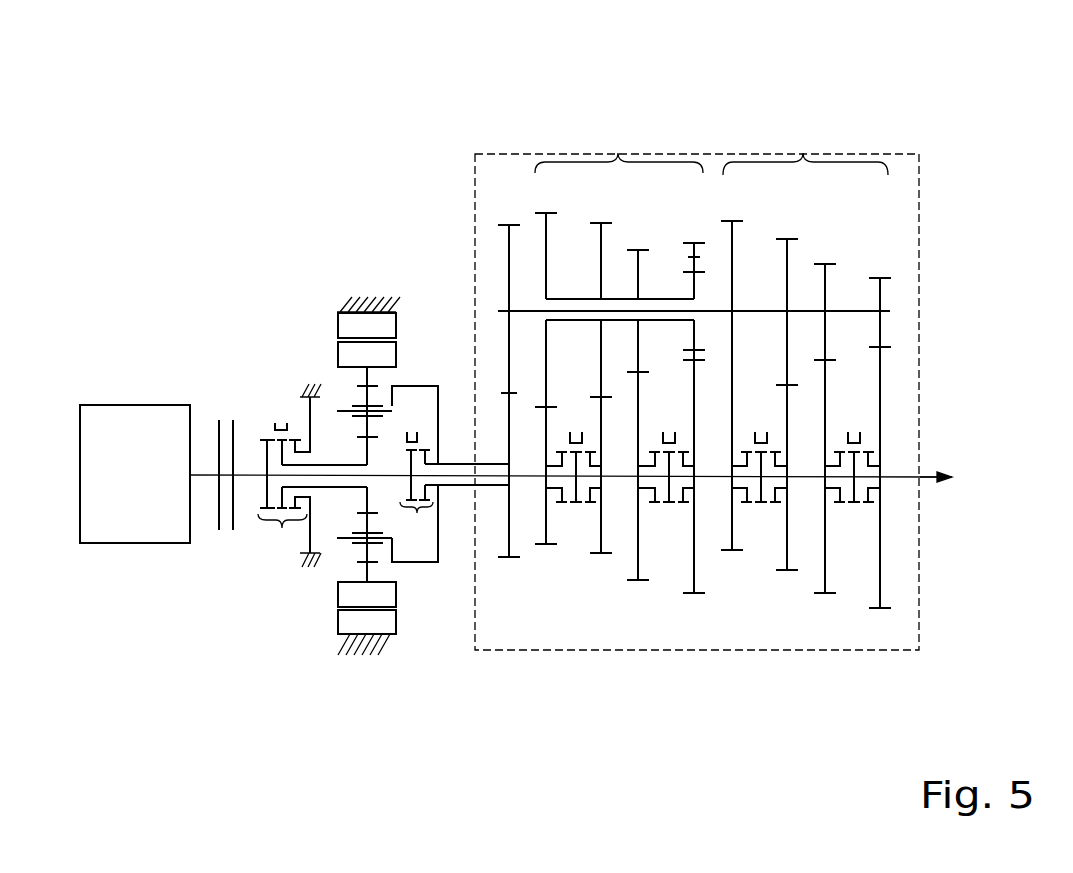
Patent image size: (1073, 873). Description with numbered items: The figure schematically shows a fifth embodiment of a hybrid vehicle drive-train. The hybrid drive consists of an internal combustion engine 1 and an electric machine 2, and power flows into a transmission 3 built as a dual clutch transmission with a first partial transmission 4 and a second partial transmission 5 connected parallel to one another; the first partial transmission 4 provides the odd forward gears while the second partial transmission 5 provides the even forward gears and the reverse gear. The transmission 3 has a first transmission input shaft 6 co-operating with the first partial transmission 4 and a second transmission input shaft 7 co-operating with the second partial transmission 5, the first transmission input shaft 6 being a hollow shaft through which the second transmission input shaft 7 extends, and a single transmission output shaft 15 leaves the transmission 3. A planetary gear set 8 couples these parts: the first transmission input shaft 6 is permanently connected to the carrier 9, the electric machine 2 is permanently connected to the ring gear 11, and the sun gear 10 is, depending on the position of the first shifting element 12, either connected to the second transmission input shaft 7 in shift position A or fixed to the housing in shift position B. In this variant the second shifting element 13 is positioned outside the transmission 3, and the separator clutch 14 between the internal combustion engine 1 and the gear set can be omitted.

The internal combustion engine 1 is at (152, 427).
The electric machine 2 is at (363, 283).
The transmission 3 is at (929, 168).
The first partial transmission 4 is at (803, 153).
The second partial transmission 5 is at (618, 153).
The first transmission input shaft 6 is at (460, 464).
The second transmission input shaft 7 is at (452, 476).
The planetary gear set 8 is at (331, 383).
The carrier 9 is at (417, 385).
The sun gear 10 is at (364, 568).
The ring gear 11 is at (367, 495).
The first shifting element 12 is at (282, 530).
The second shifting element 13 is at (417, 514).
The separator clutch 14 is at (226, 412).
The transmission output shaft 15 is at (928, 476).